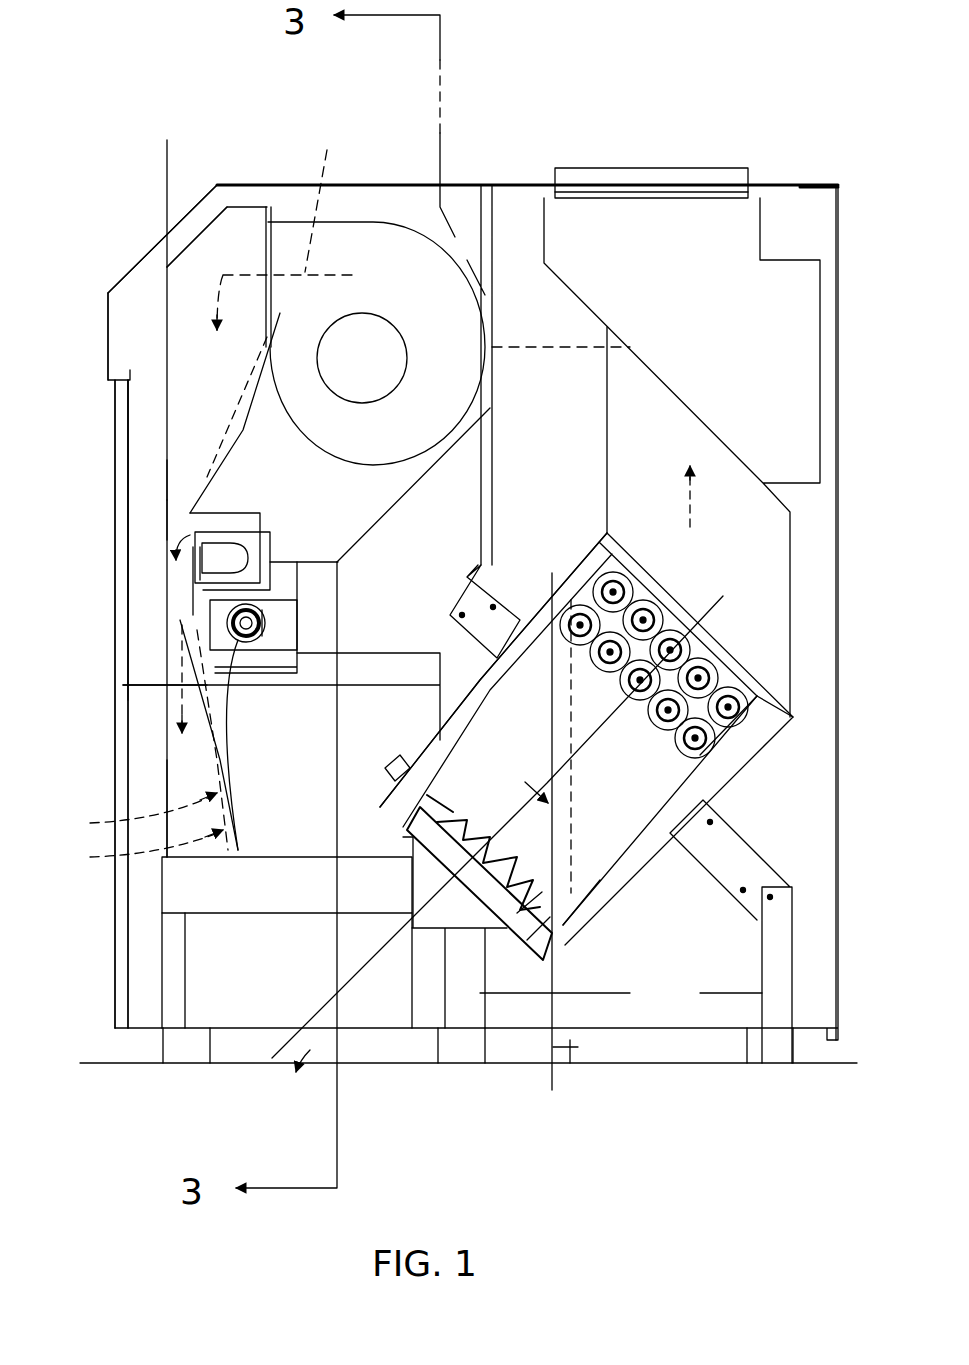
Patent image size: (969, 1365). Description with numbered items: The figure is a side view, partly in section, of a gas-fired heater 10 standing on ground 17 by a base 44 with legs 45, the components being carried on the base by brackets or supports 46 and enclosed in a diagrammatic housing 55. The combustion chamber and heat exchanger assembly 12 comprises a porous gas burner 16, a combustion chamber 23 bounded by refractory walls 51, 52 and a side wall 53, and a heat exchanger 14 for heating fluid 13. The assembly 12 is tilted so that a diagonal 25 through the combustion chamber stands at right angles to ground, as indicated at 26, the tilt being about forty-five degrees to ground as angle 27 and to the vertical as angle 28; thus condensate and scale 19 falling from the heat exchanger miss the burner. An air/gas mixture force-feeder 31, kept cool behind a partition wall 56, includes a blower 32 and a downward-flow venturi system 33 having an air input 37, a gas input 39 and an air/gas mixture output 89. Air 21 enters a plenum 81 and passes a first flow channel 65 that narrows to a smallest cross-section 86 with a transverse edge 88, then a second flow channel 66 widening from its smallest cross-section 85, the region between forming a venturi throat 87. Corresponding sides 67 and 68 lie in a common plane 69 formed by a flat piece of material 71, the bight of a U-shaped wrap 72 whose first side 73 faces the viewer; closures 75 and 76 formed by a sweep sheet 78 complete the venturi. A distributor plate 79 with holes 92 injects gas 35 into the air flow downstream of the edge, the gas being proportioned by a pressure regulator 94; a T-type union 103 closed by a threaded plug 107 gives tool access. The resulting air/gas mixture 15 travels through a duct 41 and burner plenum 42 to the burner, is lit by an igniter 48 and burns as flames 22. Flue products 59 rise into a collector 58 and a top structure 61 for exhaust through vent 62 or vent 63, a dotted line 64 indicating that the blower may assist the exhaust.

The gas-fired heater 10 is at (565, 413).
The combustion chamber and heat exchanger assembly 12 is at (690, 865).
The fluid 13 is at (727, 687).
The heat exchanger 14 is at (735, 745).
The air/gas mixture 15 is at (182, 700).
The gas burner 16 is at (553, 948).
The ground 17 is at (705, 1063).
The condensate and scale 19 is at (575, 800).
The air 21 is at (287, 223).
The flames 22 is at (479, 858).
The combustion chamber 23 is at (643, 765).
The diagonal 25 is at (500, 700).
The right-angle indication 26 is at (578, 1047).
The angle 27 is at (404, 966).
The angle 28 is at (534, 770).
The air/gas mixture force-feeder 31 is at (262, 495).
The blower 32 is at (378, 237).
The venturi system 33 is at (162, 331).
The gas 35 is at (265, 526).
The air input 37 is at (283, 215).
The gas input 39 is at (262, 642).
The duct 41 is at (272, 917).
The burner plenum 42 is at (428, 933).
The base 44 is at (427, 1063).
The legs 45 is at (163, 1048).
The brackets or supports 46 is at (688, 1010).
The igniter 48 is at (398, 745).
The wall of refractory material 51 is at (437, 740).
The wall of refractory material 52 is at (710, 790).
The side wall 53 is at (583, 910).
The housing 55 is at (118, 955).
The partition wall 56 is at (492, 205).
The collector 58 is at (607, 482).
The flue products 59 is at (690, 515).
The top structure 61 is at (718, 327).
The vent 62 is at (640, 168).
The vent 63 is at (838, 330).
The dotted line 64 is at (528, 345).
The first flow channel 65 is at (187, 393).
The second flow channel 66 is at (170, 775).
The side of first flow channel 67 is at (165, 430).
The side of second flow channel 68 is at (180, 765).
The common plane 69 is at (167, 192).
The flat piece of material 71 is at (187, 660).
The U-shaped wrap 72 is at (187, 467).
The first side 73 is at (252, 425).
The closure 75 is at (216, 357).
The closure 76 is at (138, 816).
The sweep sheet 78 is at (141, 854).
The distributor plate 79 is at (338, 562).
The plenum 81 is at (192, 279).
The smallest cross-section of second flow channel 85 is at (180, 625).
The smallest cross-section of first flow channel 86 is at (182, 508).
The venturi throat 87 is at (183, 600).
The transverse edge 88 is at (180, 547).
The air/gas mixture output 89 is at (258, 903).
The holes 92 is at (178, 587).
The gas pressure regulator 94 is at (283, 622).
The T-type union 103 is at (246, 642).
The threaded plug 107 is at (238, 660).